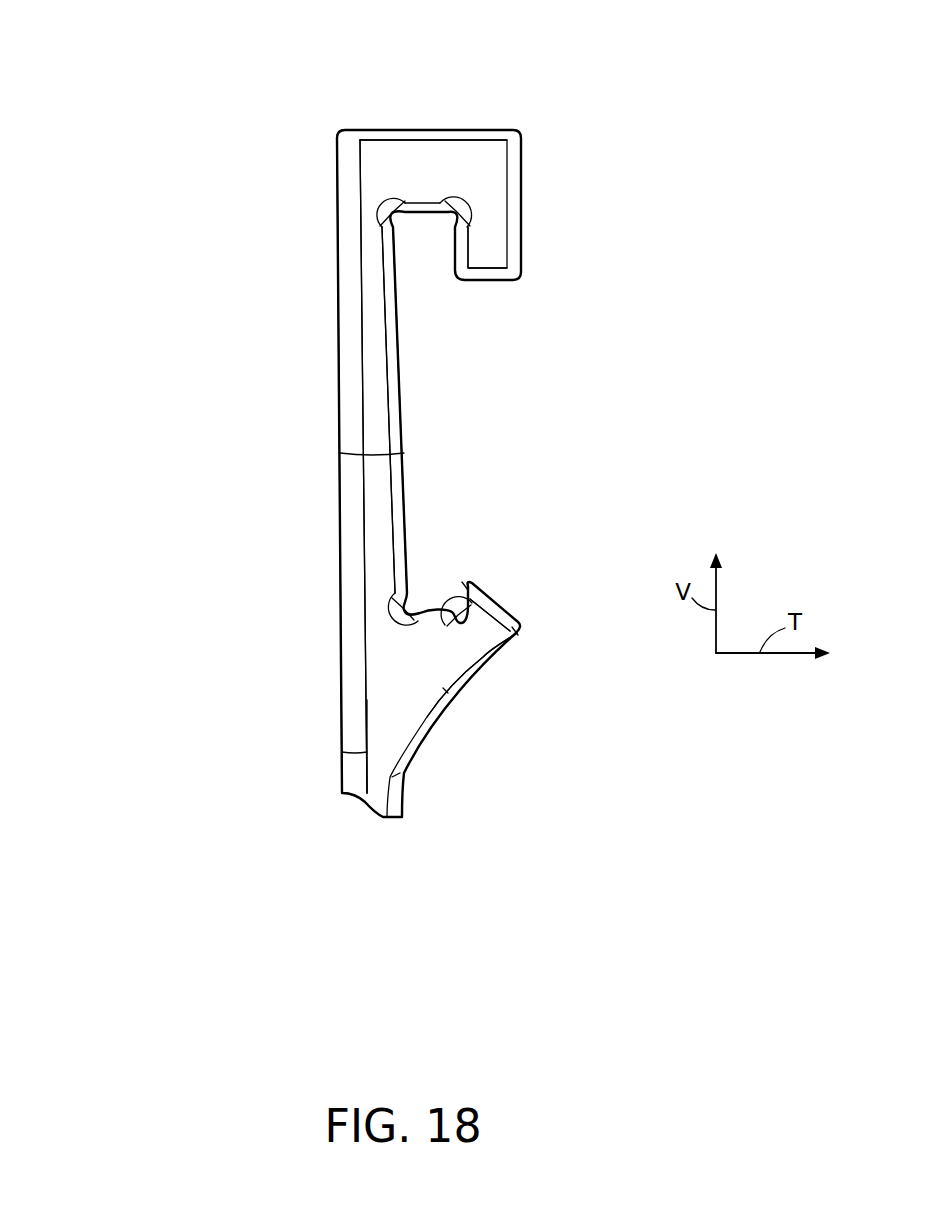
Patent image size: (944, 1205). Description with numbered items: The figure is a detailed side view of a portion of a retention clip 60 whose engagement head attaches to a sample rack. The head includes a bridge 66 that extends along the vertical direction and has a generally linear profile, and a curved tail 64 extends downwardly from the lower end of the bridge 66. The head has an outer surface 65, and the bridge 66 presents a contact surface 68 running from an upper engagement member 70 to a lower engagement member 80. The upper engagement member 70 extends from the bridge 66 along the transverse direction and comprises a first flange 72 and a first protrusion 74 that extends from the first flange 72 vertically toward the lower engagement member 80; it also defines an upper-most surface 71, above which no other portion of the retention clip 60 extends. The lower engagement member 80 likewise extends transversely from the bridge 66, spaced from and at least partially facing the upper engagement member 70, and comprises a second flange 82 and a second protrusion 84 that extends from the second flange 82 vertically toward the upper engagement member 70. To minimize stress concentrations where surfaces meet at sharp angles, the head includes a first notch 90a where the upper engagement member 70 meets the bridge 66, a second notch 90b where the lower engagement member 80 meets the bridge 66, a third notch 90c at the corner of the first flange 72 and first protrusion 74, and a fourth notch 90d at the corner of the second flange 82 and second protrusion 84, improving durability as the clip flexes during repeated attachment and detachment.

The retention clip 60 is at (163, 58).
The curved tail 64 is at (357, 780).
The outer surface 65 is at (384, 126).
The bridge 66 is at (365, 425).
The contact surface 68 is at (402, 403).
The upper engagement member 70 is at (548, 155).
The upper-most surface 71 is at (452, 129).
The first flange 72 is at (409, 180).
The first protrusion 74 is at (488, 255).
The lower engagement member 80 is at (500, 677).
The second flange 82 is at (393, 680).
The second protrusion 84 is at (480, 600).
The first notch 90a is at (378, 213).
The second notch 90b is at (394, 616).
The third notch 90c is at (464, 213).
The fourth notch 90d is at (468, 624).